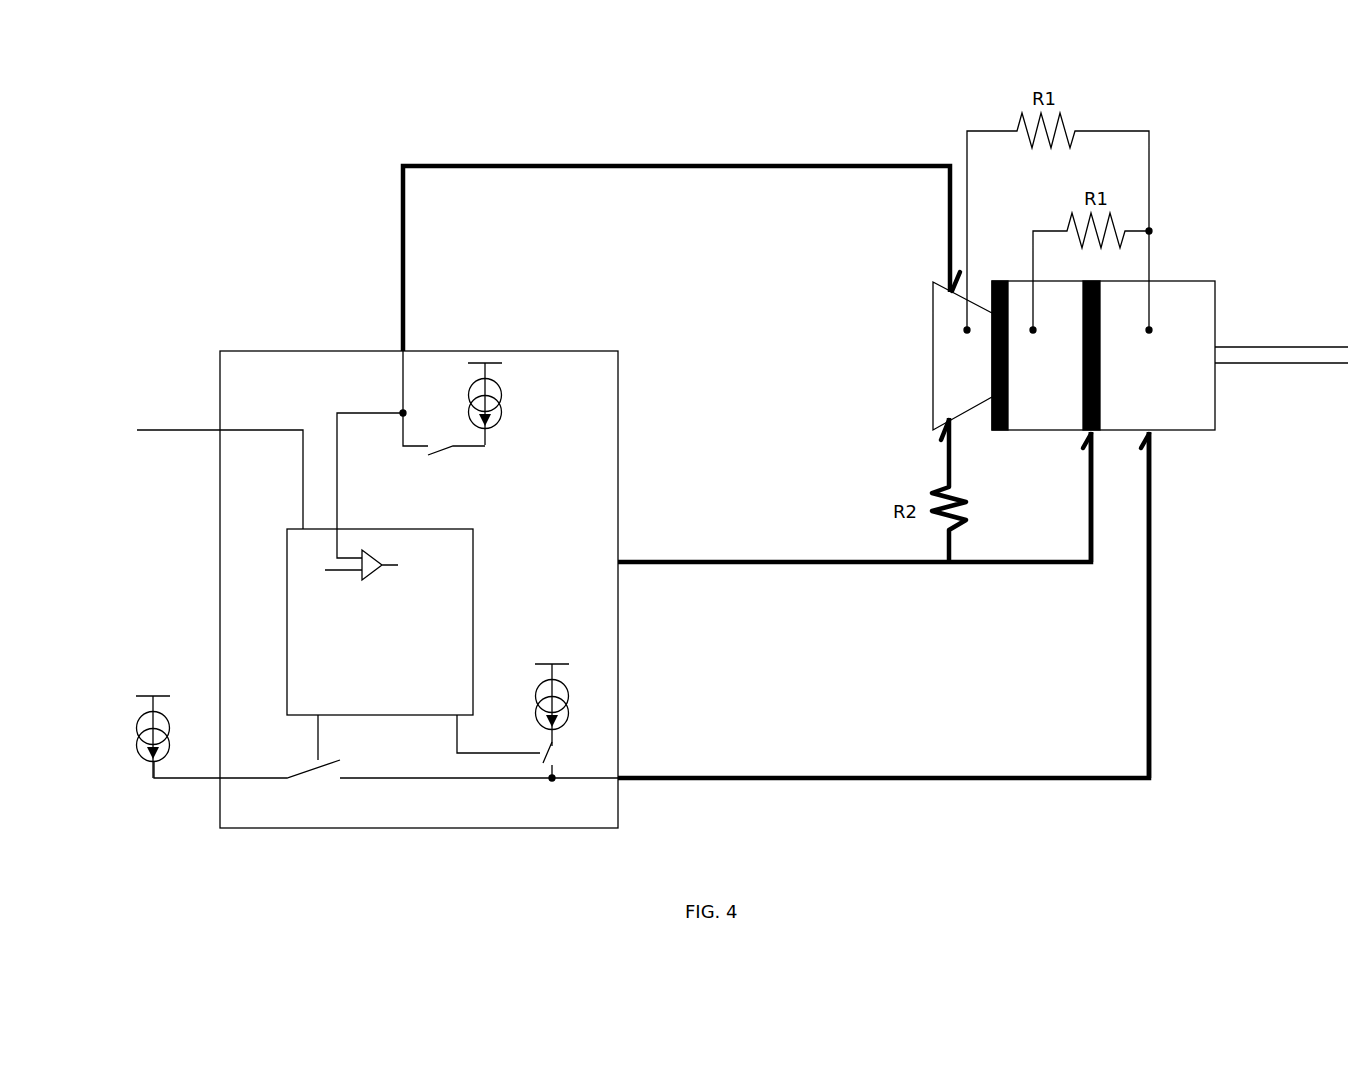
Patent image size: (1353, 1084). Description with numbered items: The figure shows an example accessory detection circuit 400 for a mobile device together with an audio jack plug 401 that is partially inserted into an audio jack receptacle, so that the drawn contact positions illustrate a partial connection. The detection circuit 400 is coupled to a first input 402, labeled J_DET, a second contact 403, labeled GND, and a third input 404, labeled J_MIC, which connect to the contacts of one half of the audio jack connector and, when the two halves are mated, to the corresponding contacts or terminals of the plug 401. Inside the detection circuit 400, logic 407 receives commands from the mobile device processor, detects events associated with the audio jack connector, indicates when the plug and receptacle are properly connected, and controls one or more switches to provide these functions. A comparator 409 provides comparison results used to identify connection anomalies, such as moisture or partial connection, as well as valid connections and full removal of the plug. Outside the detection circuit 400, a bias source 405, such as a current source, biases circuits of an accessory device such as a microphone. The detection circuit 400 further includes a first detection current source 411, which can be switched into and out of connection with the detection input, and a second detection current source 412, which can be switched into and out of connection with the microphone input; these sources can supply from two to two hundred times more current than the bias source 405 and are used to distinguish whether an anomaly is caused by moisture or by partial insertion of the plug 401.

The detection circuit 400 is at (587, 351).
The audio jack plug 401 is at (1195, 281).
The first input 402 is at (950, 247).
The second contact 403 is at (1091, 470).
The third input 404 is at (1152, 466).
The bias source 405 is at (137, 725).
The logic 407 is at (380, 622).
The comparator 409 is at (372, 573).
The first detection current source 411 is at (503, 397).
The second detection current source 412 is at (537, 697).